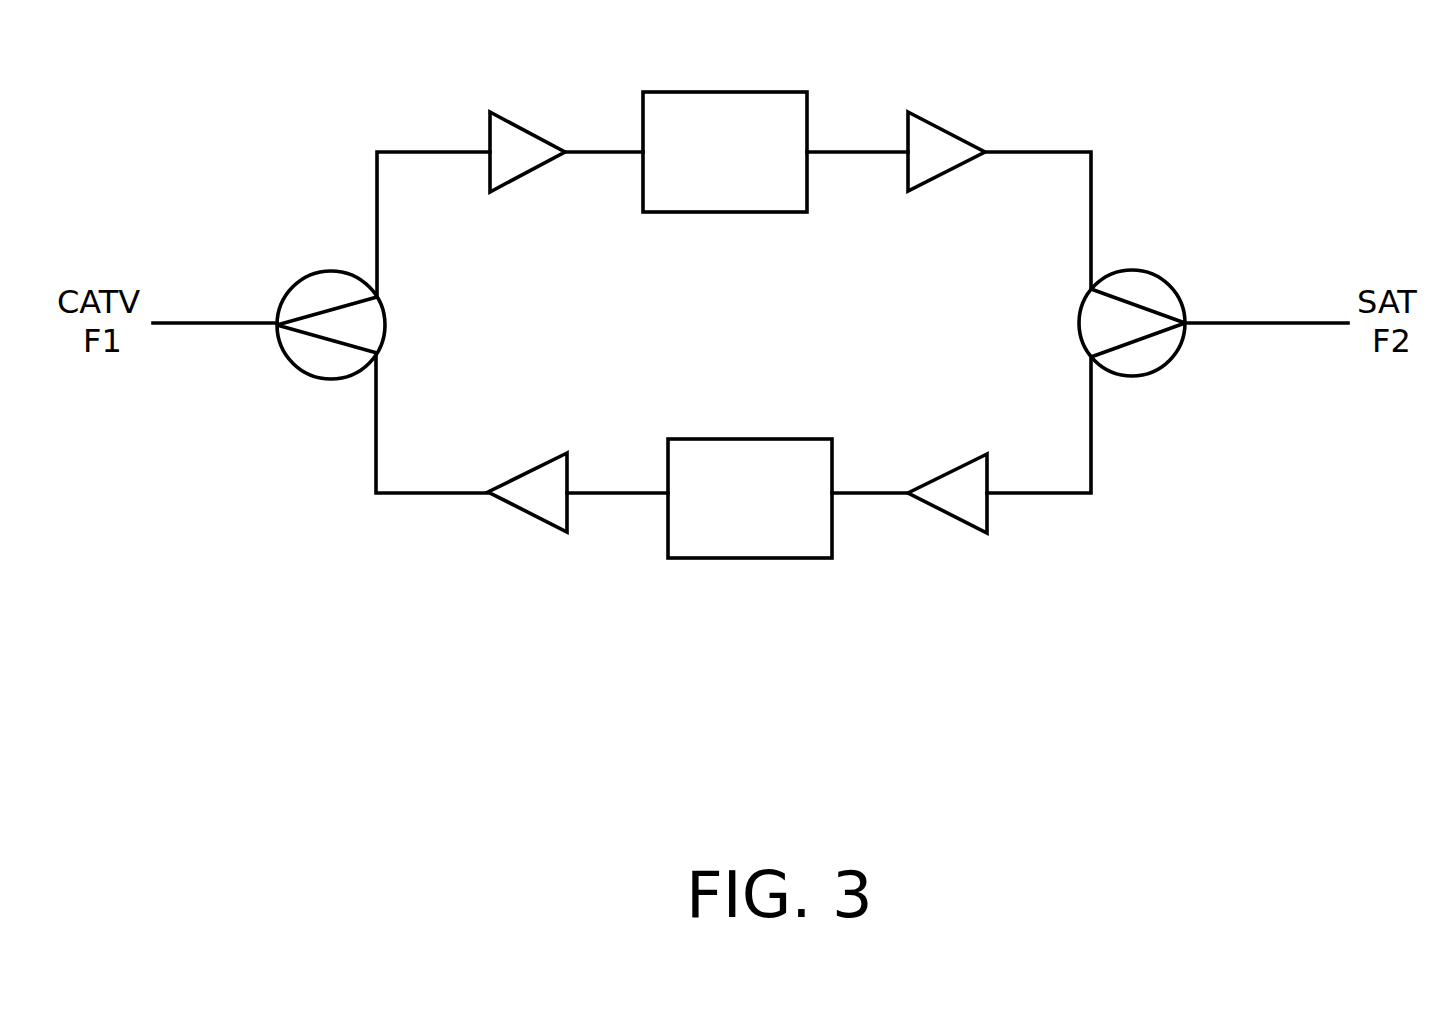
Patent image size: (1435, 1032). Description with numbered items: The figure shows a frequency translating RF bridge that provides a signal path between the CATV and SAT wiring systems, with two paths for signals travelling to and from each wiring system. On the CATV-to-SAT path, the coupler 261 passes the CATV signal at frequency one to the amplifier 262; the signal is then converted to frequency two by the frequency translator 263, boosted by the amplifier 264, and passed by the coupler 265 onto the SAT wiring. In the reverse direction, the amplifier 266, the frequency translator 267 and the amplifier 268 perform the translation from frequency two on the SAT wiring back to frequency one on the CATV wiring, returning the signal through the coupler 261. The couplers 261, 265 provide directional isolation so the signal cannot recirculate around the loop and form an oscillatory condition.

The coupler 261 is at (393, 321).
The amplifier 262 is at (523, 120).
The frequency translator 263 is at (733, 86).
The amplifier 264 is at (948, 123).
The coupler 265 is at (1175, 281).
The amplifier 266 is at (962, 535).
The frequency translator 267 is at (738, 563).
The amplifier 268 is at (518, 518).